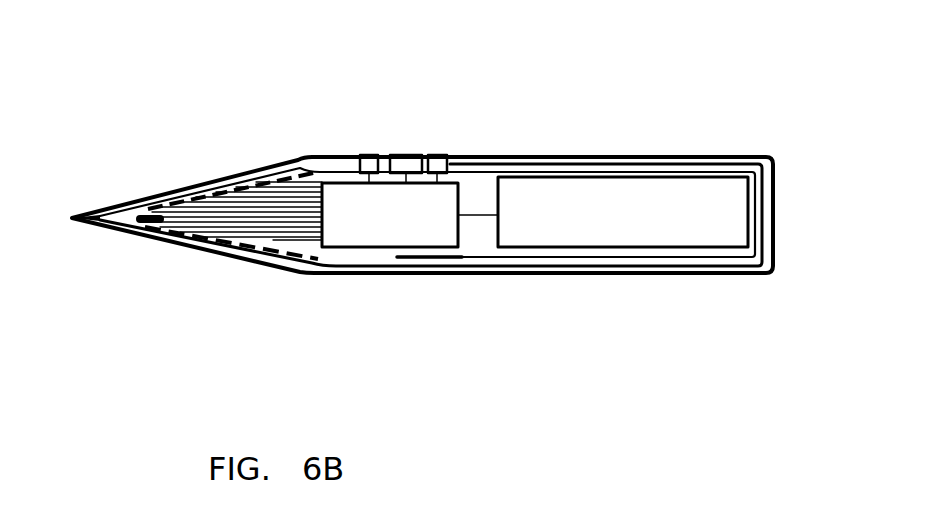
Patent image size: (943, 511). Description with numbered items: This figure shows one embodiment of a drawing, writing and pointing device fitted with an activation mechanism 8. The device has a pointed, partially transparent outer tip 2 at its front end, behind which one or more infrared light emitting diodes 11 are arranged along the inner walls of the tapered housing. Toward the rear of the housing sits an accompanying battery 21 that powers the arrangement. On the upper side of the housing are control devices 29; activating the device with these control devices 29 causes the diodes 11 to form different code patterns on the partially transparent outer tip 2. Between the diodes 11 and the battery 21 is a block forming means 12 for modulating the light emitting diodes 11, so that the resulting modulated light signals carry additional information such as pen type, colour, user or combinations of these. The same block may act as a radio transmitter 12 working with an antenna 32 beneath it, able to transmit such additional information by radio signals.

The partially transparent outer tip 2 is at (110, 205).
The activation mechanism/function 8 is at (698, 156).
The infrared light emitting diodes 11 is at (270, 178).
The means for modulation of the light emitting diodes 12 is at (370, 248).
The battery 21 is at (619, 172).
The control devices 29 is at (438, 155).
The antenna 32 is at (452, 258).